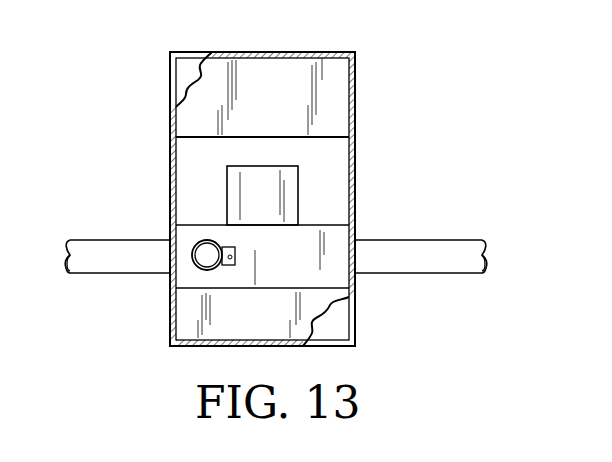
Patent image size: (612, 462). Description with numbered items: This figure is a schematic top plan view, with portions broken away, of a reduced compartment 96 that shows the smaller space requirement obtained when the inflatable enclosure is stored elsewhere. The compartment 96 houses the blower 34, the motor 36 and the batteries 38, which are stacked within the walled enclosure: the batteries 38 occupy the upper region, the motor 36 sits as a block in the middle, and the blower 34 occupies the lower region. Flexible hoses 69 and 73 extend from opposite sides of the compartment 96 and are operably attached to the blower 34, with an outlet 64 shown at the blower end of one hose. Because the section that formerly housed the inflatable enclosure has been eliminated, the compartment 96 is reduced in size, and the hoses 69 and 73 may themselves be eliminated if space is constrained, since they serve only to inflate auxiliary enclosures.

The blower 34 is at (322, 275).
The motor 36 is at (237, 187).
The batteries 38 is at (330, 93).
The outlet 64 is at (205, 262).
The flexible hose 69 is at (434, 248).
The flexible hose 73 is at (86, 248).
The reduced compartment 96 is at (349, 148).